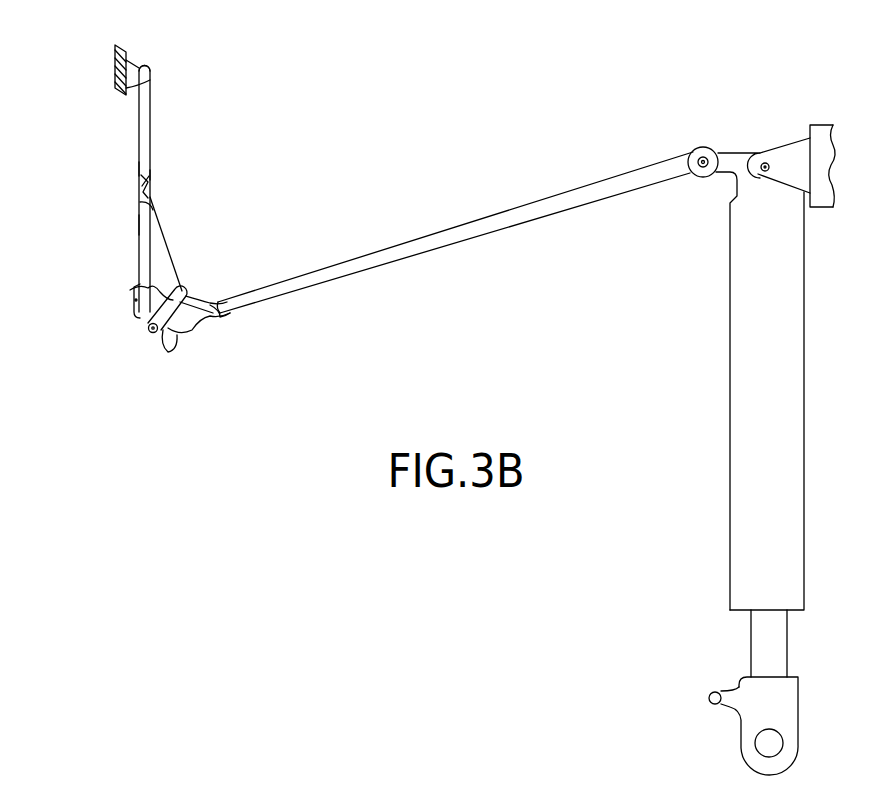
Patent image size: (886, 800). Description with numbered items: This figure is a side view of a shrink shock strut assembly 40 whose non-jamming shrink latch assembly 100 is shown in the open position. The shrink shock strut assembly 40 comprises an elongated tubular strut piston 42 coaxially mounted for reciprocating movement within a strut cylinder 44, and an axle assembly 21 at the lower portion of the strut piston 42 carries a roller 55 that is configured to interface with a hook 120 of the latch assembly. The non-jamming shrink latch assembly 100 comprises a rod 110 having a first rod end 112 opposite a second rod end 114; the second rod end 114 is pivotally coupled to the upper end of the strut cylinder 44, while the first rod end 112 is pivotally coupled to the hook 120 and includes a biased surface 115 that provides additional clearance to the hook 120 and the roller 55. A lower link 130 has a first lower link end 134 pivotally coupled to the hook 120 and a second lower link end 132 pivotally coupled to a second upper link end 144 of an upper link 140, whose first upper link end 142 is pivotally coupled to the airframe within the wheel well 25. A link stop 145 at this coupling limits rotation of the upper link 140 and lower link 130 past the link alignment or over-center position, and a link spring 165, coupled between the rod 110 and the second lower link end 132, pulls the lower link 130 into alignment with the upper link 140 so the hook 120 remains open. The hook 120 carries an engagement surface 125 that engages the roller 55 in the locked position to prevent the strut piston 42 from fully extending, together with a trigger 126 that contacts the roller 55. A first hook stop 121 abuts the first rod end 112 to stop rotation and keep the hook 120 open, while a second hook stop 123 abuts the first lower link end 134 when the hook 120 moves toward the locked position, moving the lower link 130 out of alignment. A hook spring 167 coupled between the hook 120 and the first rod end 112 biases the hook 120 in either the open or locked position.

The wheel well 25 is at (115, 60).
The first upper link end 142 is at (150, 72).
The upper link 140 is at (150, 118).
The second upper link end 144 is at (139, 168).
The link stop 145 is at (150, 174).
The second lower link end 132 is at (150, 190).
The link spring 165 is at (140, 202).
The lower link 130 is at (140, 223).
The first hook stop 121 is at (183, 290).
The second hook stop 123 is at (135, 287).
The biased surface 115 is at (181, 299).
The first rod end 112 is at (218, 300).
The first lower link end 134 is at (139, 300).
The hook 120 is at (148, 329).
The trigger 126 is at (217, 322).
The engagement surface 125 is at (192, 322).
The hook spring 167 is at (168, 338).
The non-jamming shrink latch assembly 100 is at (250, 228).
The rod 110 is at (452, 232).
The shrink shock strut assembly 40 is at (614, 86).
The second rod end 114 is at (714, 151).
The strut cylinder 44 is at (743, 370).
The strut piston 42 is at (763, 645).
The roller 55 is at (709, 702).
The axle assembly 21 is at (745, 720).